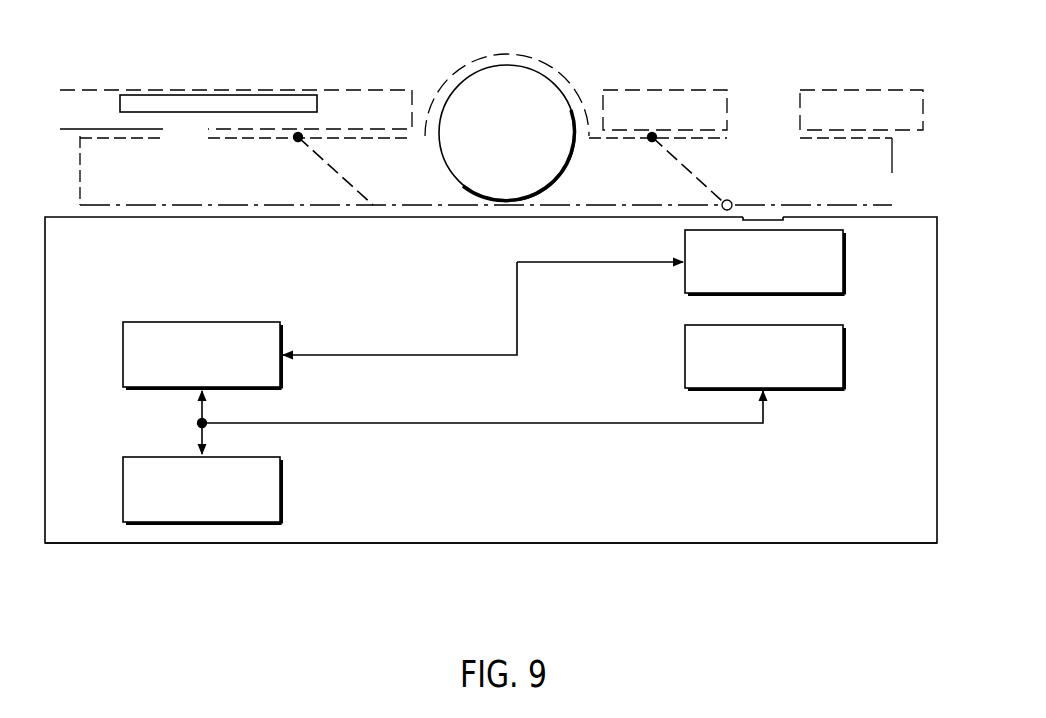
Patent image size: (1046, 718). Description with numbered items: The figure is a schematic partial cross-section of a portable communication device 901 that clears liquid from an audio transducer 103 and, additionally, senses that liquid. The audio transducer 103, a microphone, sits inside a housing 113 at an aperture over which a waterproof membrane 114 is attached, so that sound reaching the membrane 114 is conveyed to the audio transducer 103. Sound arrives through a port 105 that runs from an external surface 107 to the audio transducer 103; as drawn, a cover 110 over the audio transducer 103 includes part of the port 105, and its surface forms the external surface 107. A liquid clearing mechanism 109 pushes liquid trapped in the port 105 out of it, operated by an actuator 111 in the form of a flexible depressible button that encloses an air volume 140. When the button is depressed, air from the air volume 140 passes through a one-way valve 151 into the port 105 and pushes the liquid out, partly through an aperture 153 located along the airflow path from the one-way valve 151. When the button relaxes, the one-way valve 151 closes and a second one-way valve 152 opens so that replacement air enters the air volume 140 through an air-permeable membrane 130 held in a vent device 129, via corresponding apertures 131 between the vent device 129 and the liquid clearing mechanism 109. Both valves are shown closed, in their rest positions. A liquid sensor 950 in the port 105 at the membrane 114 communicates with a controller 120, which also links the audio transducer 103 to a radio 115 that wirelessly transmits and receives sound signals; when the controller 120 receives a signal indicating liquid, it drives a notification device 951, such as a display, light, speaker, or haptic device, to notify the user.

The device 901 is at (117, 554).
The housing 113 is at (482, 544).
The membrane 114 is at (765, 215).
The liquid clearing mechanism 109 is at (84, 209).
The vent device 129 is at (138, 90).
The air-permeable membrane 130 is at (189, 93).
The apertures 131 is at (183, 139).
The second one-way valve 152 is at (353, 176).
The air volume 140 is at (472, 92).
The actuator 111 is at (543, 56).
The cover 110 is at (663, 89).
The external surface 107 is at (710, 81).
The port 105 is at (763, 107).
The aperture 153 is at (888, 192).
The one-way valve 151 is at (673, 158).
The liquid sensor 950 is at (722, 207).
The controller 120 is at (123, 353).
The notification device 951 is at (123, 490).
The audio transducer 103 is at (846, 262).
The radio 115 is at (844, 355).